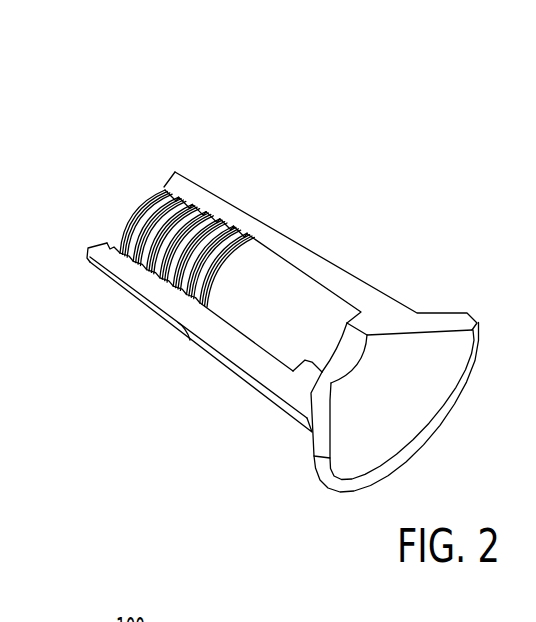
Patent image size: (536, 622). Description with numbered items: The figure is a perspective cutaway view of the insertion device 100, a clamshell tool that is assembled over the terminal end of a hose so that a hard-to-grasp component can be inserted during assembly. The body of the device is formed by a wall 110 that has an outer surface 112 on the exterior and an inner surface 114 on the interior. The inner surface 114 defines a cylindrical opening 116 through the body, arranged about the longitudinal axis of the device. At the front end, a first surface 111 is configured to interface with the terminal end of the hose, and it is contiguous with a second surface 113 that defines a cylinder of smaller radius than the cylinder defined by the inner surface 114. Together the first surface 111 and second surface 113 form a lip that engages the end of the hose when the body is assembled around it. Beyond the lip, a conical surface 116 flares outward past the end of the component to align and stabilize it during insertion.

The insertion device 100 is at (126, 90).
The wall 110 is at (240, 224).
The first surface 111 is at (294, 388).
The outer surface 112 is at (178, 356).
The second surface 113 is at (366, 351).
The inner surface 114 is at (321, 291).
The cylindrical opening 116 is at (125, 211).